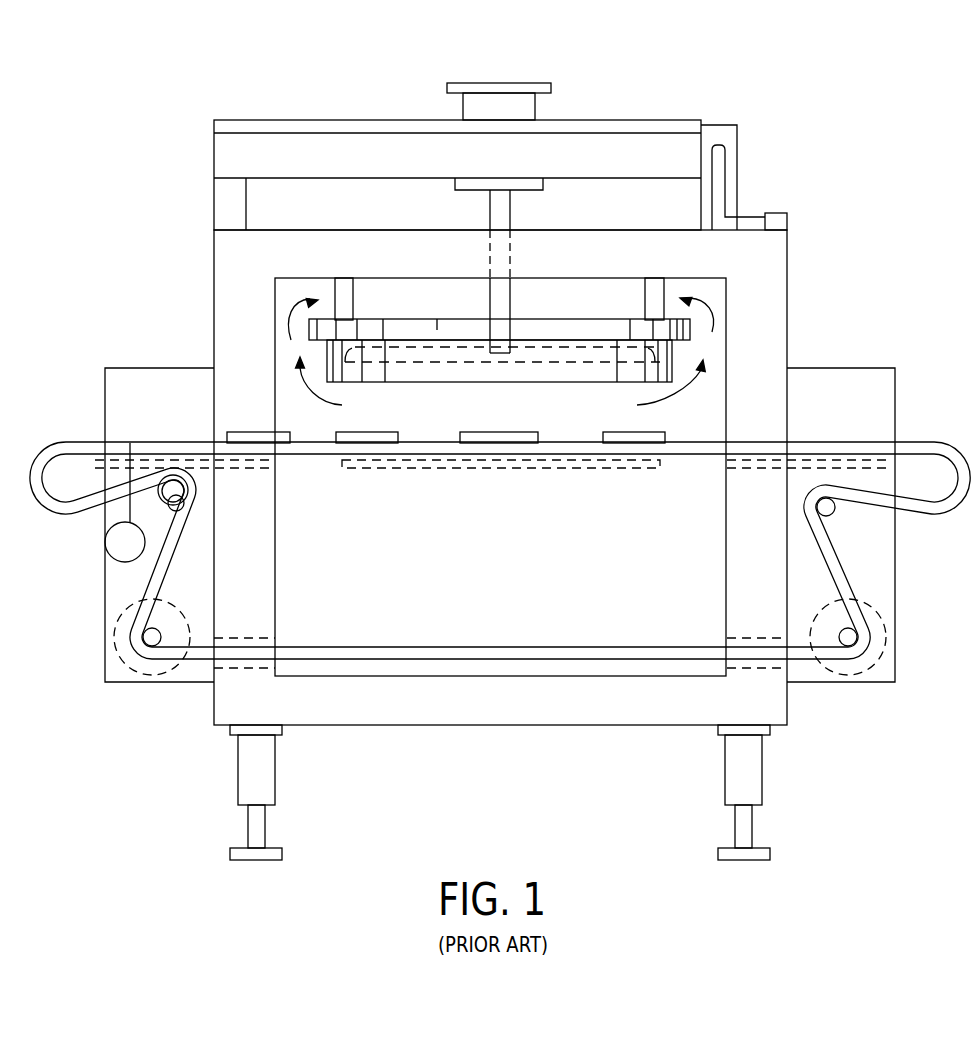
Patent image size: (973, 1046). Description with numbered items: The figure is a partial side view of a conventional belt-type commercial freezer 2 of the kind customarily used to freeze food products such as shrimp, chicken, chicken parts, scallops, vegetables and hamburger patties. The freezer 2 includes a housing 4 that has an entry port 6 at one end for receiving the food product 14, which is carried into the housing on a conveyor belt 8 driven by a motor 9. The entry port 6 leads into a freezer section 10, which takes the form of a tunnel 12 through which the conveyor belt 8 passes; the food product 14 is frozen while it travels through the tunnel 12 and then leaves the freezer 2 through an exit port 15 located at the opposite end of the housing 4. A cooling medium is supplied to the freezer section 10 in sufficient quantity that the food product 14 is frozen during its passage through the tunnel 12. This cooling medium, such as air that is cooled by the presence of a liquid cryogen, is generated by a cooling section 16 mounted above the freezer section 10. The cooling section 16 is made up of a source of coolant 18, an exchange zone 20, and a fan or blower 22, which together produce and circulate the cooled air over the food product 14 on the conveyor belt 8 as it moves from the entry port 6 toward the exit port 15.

The freezer 2 is at (802, 116).
The housing 4 is at (772, 278).
The entry port 6 is at (238, 408).
The conveyor belt 8 is at (92, 446).
The motor 9 is at (190, 482).
The freezer section 10 is at (565, 292).
The tunnel 12 is at (500, 423).
The food product 14 is at (358, 436).
The exit port 15 is at (754, 410).
The cooling section 16 is at (279, 108).
The source of coolant 18 is at (322, 147).
The exchange zone 20 is at (427, 435).
The fan or blower 22 is at (605, 330).